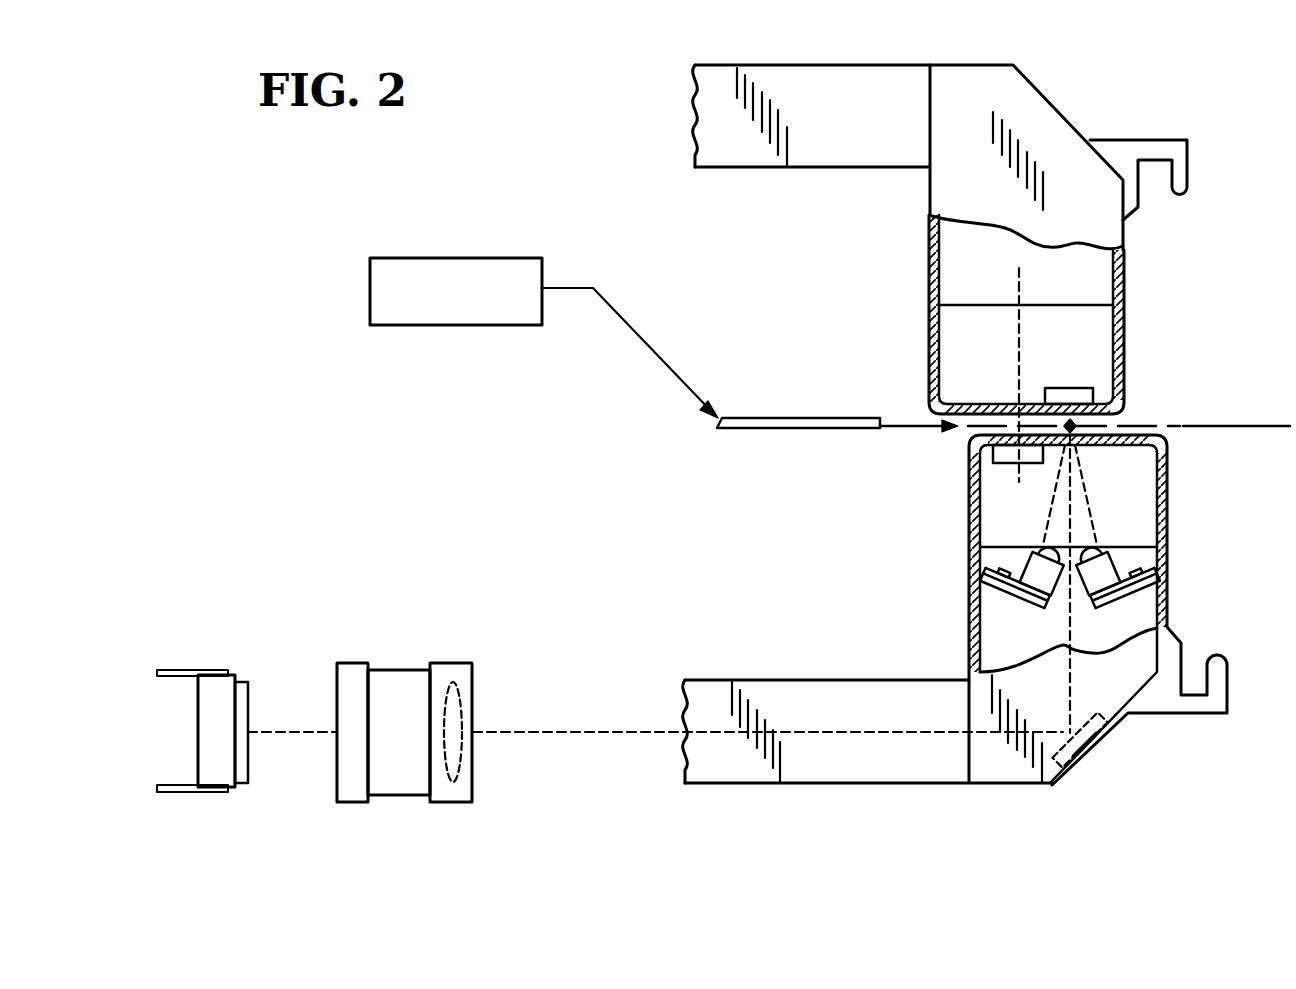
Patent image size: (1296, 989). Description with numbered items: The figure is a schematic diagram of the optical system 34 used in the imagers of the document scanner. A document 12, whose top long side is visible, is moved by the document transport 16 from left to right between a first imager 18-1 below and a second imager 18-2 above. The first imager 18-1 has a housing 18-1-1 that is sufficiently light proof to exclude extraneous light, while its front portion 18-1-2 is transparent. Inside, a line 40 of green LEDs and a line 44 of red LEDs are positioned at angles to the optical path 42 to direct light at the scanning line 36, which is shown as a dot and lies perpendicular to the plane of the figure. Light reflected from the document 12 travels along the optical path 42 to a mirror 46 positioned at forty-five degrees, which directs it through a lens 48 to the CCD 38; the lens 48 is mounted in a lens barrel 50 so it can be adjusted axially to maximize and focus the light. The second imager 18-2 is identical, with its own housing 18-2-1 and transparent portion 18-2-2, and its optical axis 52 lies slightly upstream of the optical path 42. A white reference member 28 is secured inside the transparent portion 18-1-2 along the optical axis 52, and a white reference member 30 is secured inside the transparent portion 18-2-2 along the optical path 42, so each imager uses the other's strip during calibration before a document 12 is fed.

The second imager 18-2 is at (1113, 86).
The housing of second imager 18-2-1 is at (838, 65).
The transparent portion of second imager housing 18-2-2 is at (976, 404).
The optical axis of second imager 52 is at (1017, 282).
The white reference member 30 is at (1060, 391).
The scanning line 36 is at (1071, 425).
The document transport 16 is at (467, 258).
The document 12 is at (775, 432).
The white reference member 28 is at (1015, 452).
The front portion of housing 18-1-2 is at (1130, 445).
The line of red LEDs 44 is at (1028, 552).
The line of green LEDs 40 is at (1105, 553).
The optical path 42 is at (1065, 628).
The mirror 46 is at (1108, 727).
The housing 18-1-1 is at (943, 788).
The first imager 18-1 is at (1138, 792).
The optical system 34 is at (857, 807).
The CCD 38 is at (215, 683).
The lens 48 is at (478, 683).
The lens barrel 50 is at (398, 797).